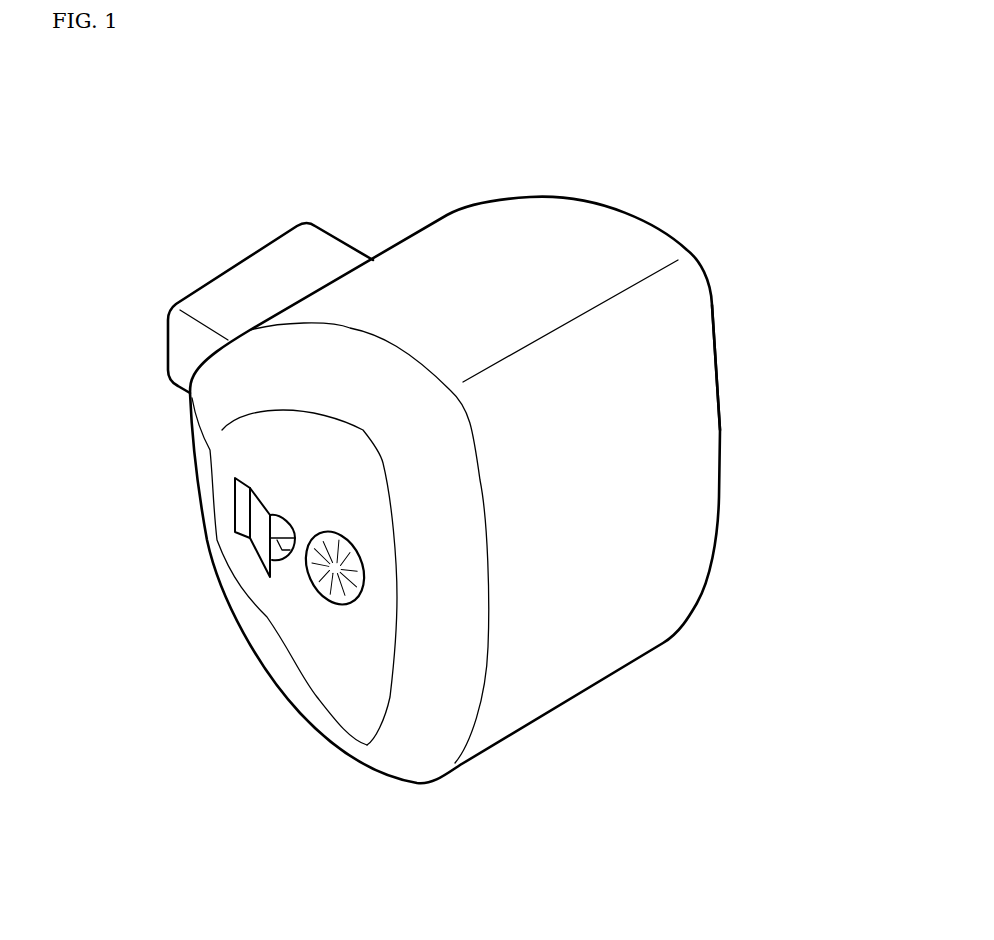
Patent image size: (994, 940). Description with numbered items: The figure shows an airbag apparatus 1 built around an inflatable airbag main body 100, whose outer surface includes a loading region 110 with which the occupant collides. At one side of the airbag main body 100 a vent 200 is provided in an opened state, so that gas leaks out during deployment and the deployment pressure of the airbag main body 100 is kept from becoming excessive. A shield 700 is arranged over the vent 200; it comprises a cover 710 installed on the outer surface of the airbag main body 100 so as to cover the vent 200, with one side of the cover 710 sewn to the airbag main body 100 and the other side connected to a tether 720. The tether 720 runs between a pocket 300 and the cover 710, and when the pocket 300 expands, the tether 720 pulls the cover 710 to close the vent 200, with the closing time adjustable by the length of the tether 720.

The airbag apparatus 1 is at (135, 106).
The airbag main body 100 is at (568, 230).
The loading region 110 is at (663, 465).
The vent 200 is at (275, 550).
The pocket 300 is at (320, 595).
The shield 700 is at (234, 538).
The cover 710 is at (245, 512).
The tether 720 is at (275, 515).